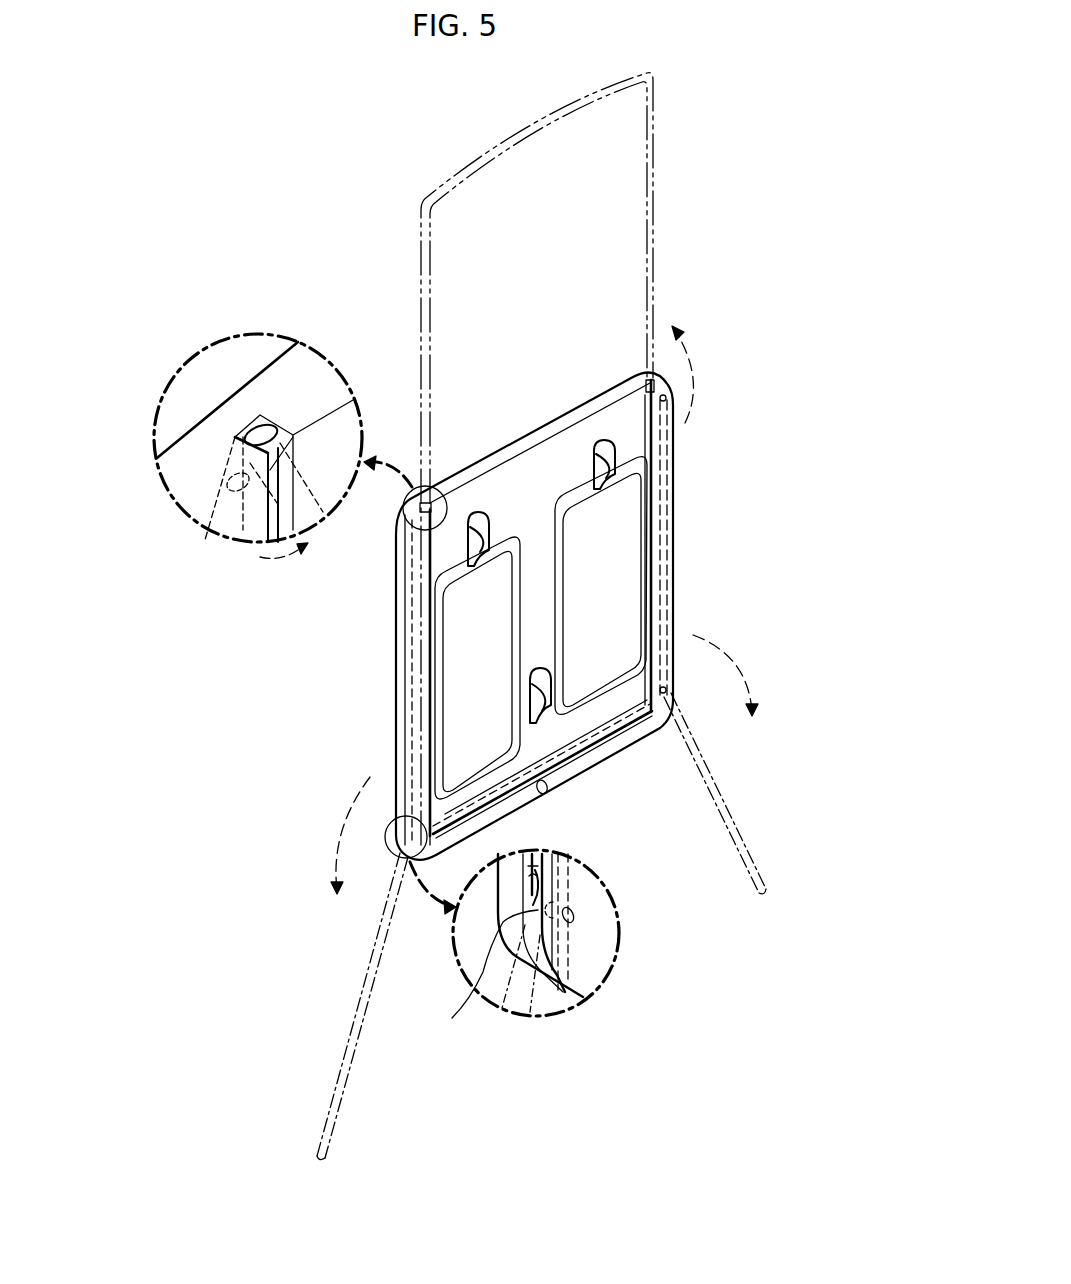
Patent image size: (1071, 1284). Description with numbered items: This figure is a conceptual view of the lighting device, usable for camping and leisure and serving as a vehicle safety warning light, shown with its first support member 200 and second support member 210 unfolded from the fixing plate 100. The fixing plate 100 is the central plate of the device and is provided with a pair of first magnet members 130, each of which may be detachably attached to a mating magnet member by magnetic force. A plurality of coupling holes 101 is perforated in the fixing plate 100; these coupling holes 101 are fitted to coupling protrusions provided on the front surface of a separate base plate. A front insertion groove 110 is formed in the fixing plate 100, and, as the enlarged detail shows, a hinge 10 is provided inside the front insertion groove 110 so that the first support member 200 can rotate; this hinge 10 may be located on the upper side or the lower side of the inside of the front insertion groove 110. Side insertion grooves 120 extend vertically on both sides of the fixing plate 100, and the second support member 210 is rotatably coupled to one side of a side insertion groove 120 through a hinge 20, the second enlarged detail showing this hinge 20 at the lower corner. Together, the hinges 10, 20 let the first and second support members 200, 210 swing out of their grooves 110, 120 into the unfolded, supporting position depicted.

The fixing plate 100 is at (303, 373).
The coupling holes 101 is at (562, 697).
The front insertion groove 110 is at (285, 527).
The side insertion groove 120 is at (533, 862).
The first magnet member 130 is at (606, 548).
The first support member 200 is at (652, 170).
The second support member 210 is at (725, 800).
The hinge 10 is at (226, 484).
The hinge 20 is at (575, 912).